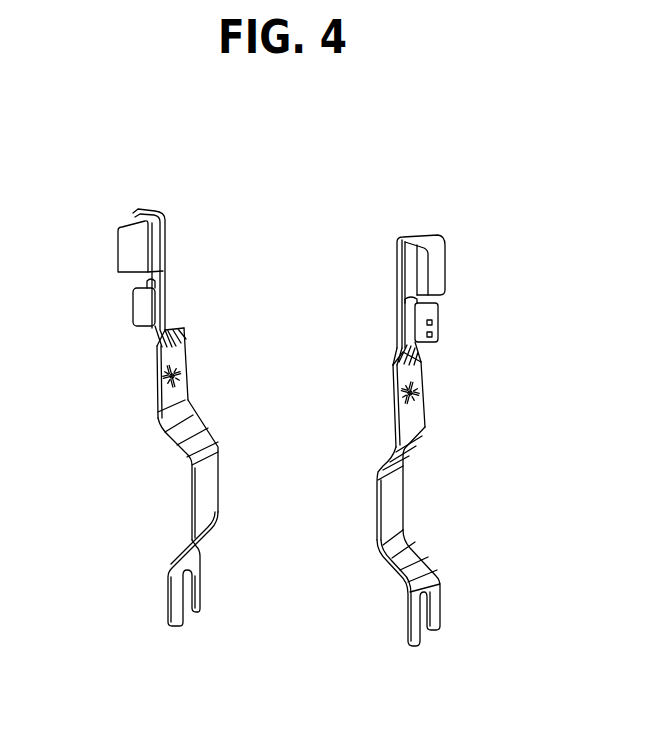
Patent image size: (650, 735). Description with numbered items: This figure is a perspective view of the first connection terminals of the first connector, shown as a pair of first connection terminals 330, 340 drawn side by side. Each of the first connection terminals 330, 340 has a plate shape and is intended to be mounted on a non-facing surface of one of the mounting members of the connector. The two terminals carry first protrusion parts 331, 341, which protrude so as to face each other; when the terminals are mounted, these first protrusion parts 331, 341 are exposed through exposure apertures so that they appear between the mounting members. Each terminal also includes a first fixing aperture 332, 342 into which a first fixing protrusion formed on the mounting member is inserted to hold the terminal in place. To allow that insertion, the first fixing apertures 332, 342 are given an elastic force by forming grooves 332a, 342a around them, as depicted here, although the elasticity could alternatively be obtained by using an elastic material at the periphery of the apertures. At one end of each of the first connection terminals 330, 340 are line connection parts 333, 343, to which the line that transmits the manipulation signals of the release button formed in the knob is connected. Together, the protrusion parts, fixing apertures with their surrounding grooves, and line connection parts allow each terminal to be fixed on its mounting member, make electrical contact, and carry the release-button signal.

The first connection terminal 330 is at (435, 610).
The first protrusion part 331 is at (392, 508).
The first fixing aperture 332 is at (417, 395).
The groove 332a is at (419, 384).
The line connection part 333 is at (413, 275).
The first connection terminal 340 is at (177, 600).
The first protrusion part 341 is at (202, 497).
The first fixing aperture 342 is at (163, 382).
The groove 342a is at (166, 370).
The line connection part 343 is at (128, 250).